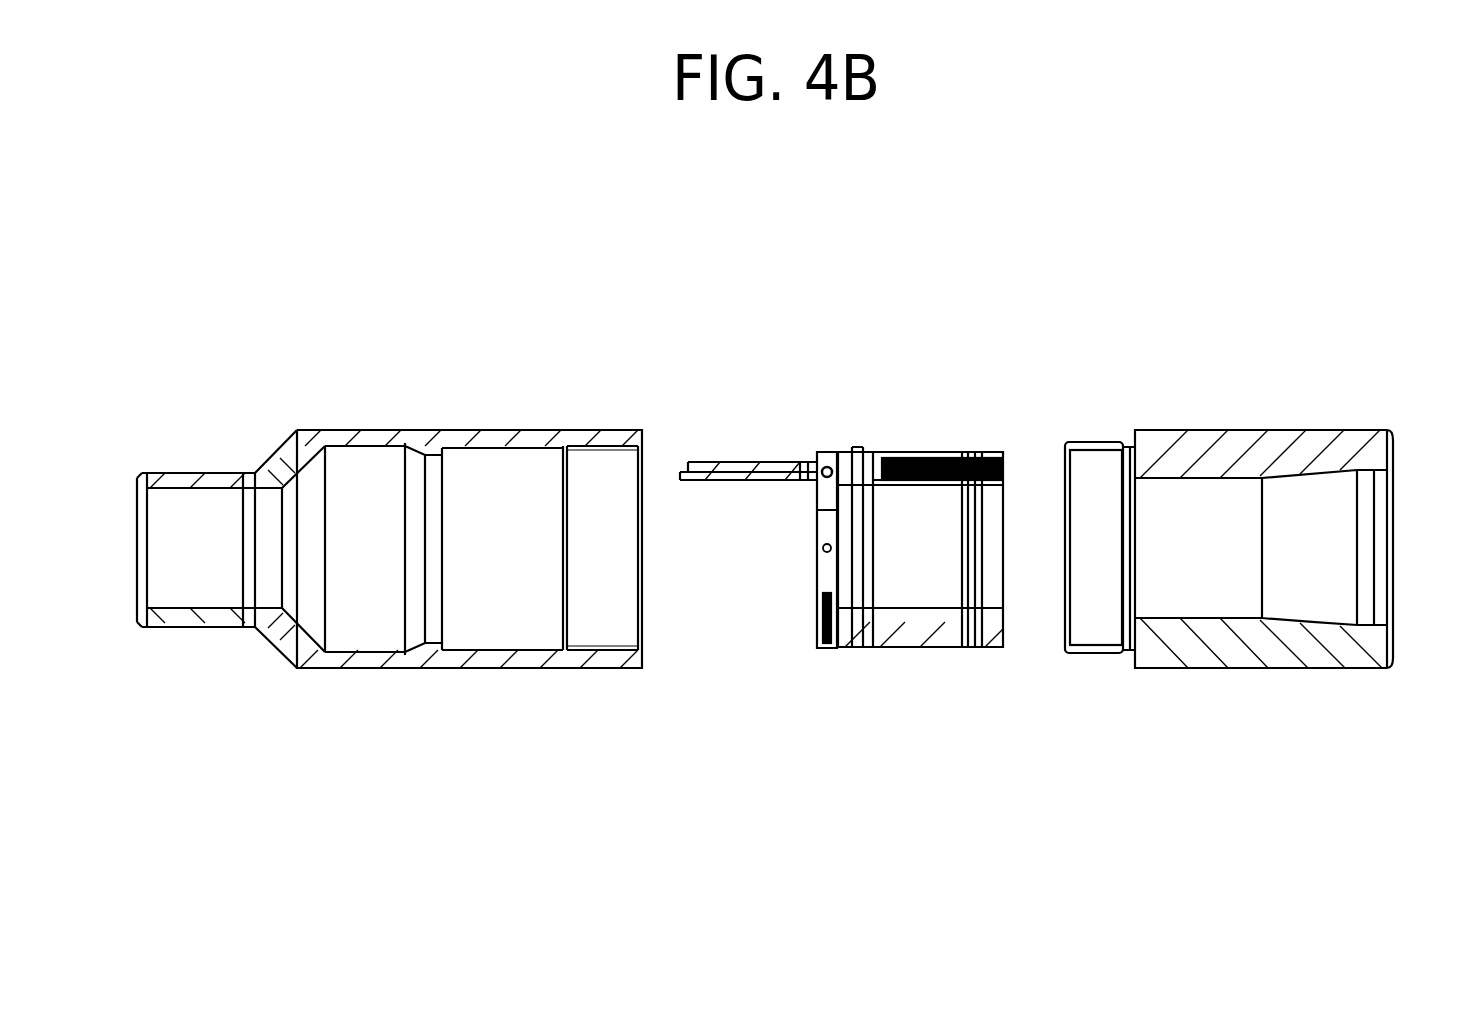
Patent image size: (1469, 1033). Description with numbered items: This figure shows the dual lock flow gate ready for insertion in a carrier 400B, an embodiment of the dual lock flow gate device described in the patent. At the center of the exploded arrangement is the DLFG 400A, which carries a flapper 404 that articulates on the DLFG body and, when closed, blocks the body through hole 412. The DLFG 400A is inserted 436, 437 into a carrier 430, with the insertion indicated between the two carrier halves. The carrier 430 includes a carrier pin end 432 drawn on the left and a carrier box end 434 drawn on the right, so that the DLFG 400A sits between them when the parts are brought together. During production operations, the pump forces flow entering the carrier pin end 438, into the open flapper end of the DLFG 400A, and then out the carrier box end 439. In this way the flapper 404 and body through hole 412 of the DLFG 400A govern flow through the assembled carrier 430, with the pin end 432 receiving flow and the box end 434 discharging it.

The DLFG ready for insertion in a carrier 400B is at (1143, 194).
The DLFG 400A is at (884, 404).
The flapper 404 is at (727, 462).
The body through hole 412 is at (1007, 497).
The carrier 430 is at (1180, 668).
The carrier pin end 432 is at (455, 428).
The carrier box end 434 is at (1238, 428).
The insertion of the DLFG into the carrier 436 is at (616, 598).
The insertion of the DLFG into the carrier 437 is at (1090, 518).
The carrier pin end flow entry 438 is at (160, 583).
The carrier box end flow exit 439 is at (1343, 540).